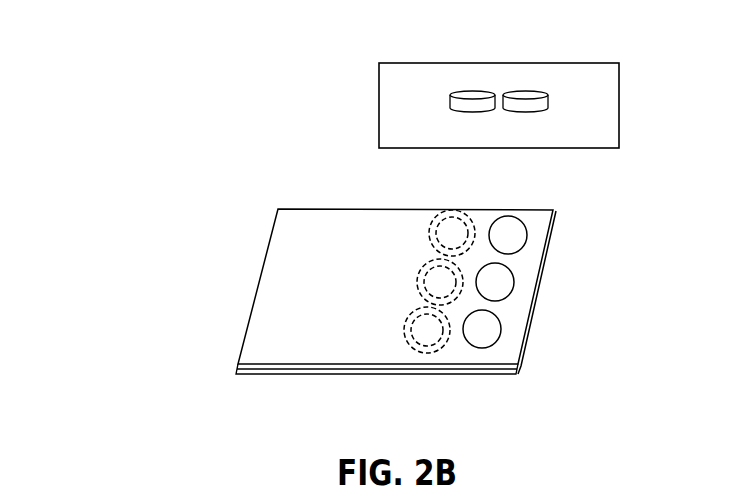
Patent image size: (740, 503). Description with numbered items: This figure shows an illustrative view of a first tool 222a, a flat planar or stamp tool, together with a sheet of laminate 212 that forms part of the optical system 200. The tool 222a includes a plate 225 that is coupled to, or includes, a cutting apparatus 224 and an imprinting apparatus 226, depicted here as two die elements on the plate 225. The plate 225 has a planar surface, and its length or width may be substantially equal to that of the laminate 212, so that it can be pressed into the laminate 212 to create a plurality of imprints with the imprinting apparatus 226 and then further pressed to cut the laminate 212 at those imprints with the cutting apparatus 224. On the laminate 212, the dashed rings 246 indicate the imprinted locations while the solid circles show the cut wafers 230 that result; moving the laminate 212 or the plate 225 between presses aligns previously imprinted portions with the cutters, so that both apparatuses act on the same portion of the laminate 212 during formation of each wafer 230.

The electronic device 200 is at (115, 69).
The tool 222a is at (411, 33).
The plate 225 is at (568, 63).
The imprinting apparatus 226 is at (450, 99).
The cutting apparatus 224 is at (548, 104).
The laminate 212 is at (280, 250).
The hidden speaker ports 246 is at (436, 205).
The wafer 230 is at (516, 224).